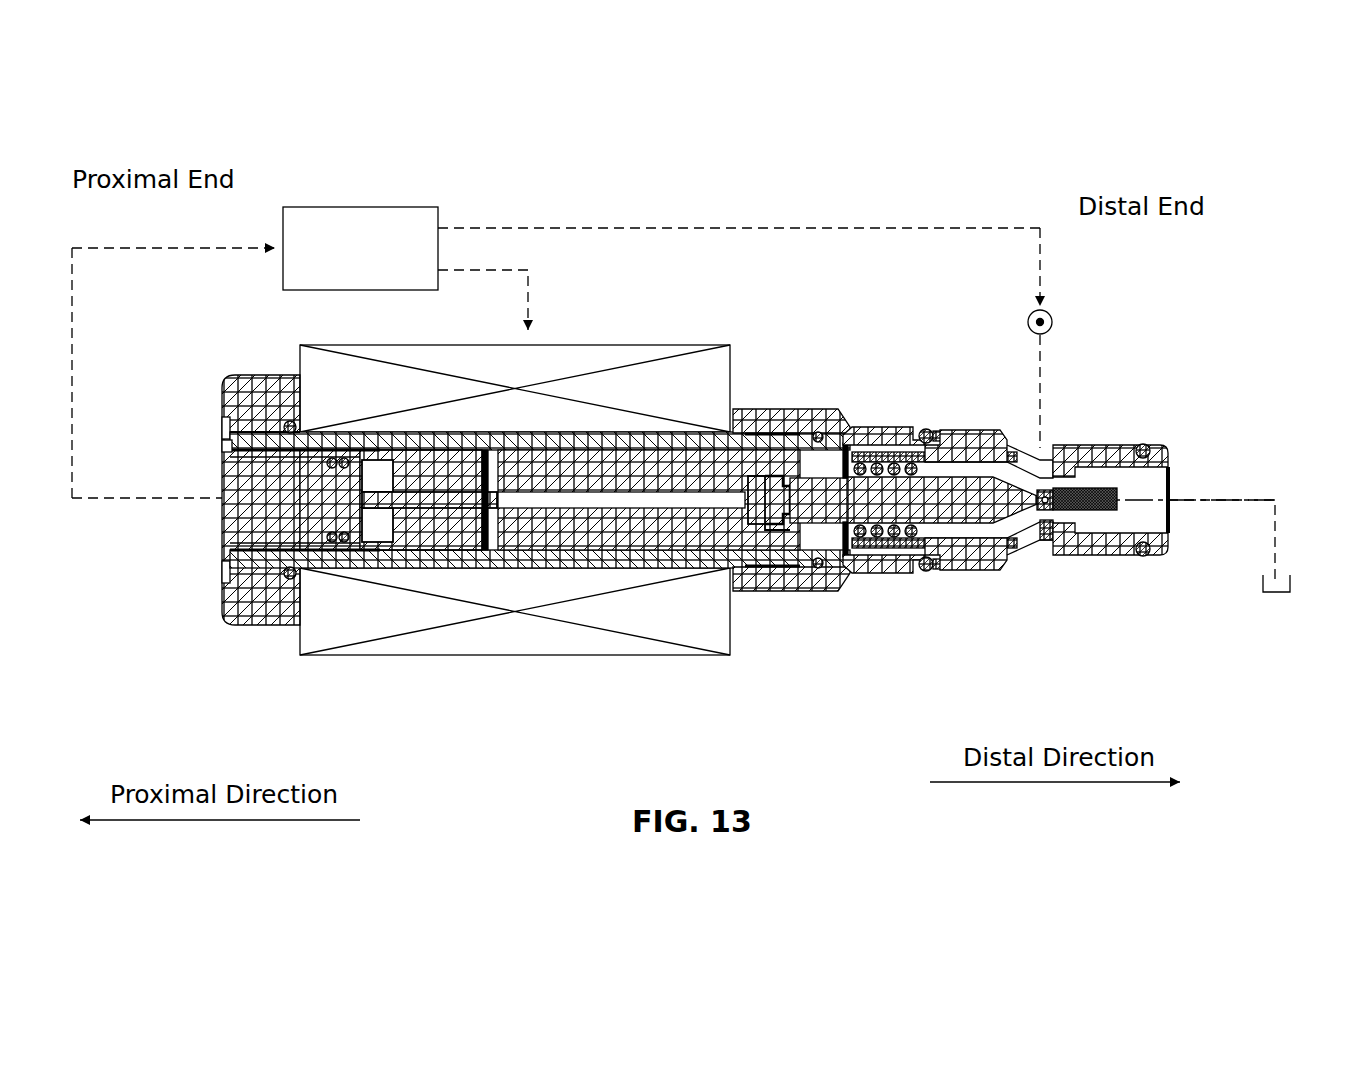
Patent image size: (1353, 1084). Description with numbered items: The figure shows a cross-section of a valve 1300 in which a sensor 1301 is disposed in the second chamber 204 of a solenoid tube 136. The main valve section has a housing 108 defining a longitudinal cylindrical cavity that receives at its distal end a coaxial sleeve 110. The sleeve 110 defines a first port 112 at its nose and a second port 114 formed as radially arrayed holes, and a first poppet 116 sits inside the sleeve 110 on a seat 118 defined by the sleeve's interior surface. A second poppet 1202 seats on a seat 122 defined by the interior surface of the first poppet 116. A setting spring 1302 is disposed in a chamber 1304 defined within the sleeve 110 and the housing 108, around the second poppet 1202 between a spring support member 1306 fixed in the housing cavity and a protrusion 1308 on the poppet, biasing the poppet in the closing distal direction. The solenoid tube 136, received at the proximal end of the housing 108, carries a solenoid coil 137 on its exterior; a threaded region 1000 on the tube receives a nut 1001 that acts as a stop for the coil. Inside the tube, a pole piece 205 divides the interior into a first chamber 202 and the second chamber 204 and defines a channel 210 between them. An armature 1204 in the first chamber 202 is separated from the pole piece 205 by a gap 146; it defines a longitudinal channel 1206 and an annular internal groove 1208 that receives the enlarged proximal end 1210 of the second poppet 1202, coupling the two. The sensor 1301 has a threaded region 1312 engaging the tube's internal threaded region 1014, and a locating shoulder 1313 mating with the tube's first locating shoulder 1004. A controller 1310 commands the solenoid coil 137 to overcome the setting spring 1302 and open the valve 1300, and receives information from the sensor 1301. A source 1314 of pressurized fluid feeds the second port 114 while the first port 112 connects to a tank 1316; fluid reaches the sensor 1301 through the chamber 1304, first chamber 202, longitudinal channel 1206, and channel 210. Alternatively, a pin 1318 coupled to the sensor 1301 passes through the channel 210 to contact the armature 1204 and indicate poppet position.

The valve 1300 is at (195, 343).
The controller 1310 is at (392, 282).
The threaded region 1000 is at (262, 425).
The nut 1001 is at (285, 397).
The first locating shoulder 1004 is at (240, 443).
The locating shoulder 1313 is at (228, 451).
The sensor 1301 is at (245, 522).
The threaded region 1312 is at (267, 556).
The threaded region 1014 is at (290, 537).
The second chamber 204 is at (377, 548).
The channel 210 is at (452, 514).
The gap 146 is at (490, 552).
The pin 1318 is at (416, 495).
The pole piece 205 is at (460, 453).
The armature 1204 is at (550, 467).
The solenoid tube 136 is at (590, 428).
The solenoid coil 137 is at (642, 347).
The longitudinal channel 1206 is at (670, 490).
The housing 108 is at (770, 415).
The first chamber 202 is at (829, 466).
The enlarged proximal end 1210 is at (773, 518).
The annular internal groove 1208 is at (760, 526).
The spring support member 1306 is at (855, 455).
The second poppet 1202 is at (921, 490).
The setting spring 1302 is at (920, 538).
The chamber 1304 is at (878, 545).
The protrusion 1308 is at (914, 565).
The second port 114 is at (1047, 446).
The first poppet 116 is at (1040, 525).
The seat 122 is at (1052, 506).
The seat 118 is at (1058, 540).
The sleeve 110 is at (1108, 446).
The first port 112 is at (1175, 516).
The source 1314 is at (1053, 322).
The tank 1316 is at (1290, 585).